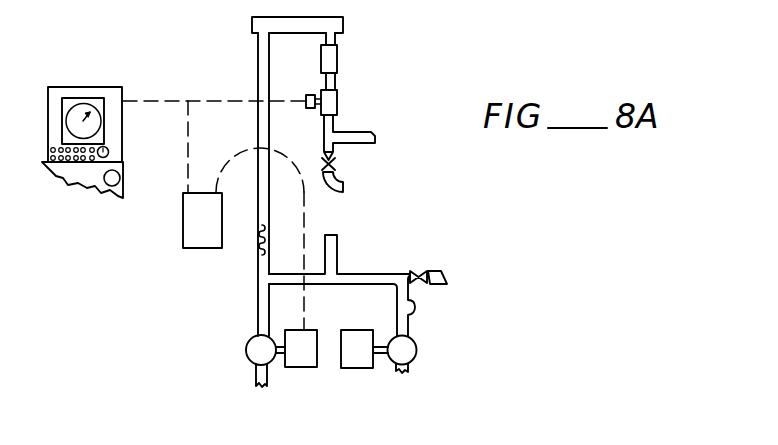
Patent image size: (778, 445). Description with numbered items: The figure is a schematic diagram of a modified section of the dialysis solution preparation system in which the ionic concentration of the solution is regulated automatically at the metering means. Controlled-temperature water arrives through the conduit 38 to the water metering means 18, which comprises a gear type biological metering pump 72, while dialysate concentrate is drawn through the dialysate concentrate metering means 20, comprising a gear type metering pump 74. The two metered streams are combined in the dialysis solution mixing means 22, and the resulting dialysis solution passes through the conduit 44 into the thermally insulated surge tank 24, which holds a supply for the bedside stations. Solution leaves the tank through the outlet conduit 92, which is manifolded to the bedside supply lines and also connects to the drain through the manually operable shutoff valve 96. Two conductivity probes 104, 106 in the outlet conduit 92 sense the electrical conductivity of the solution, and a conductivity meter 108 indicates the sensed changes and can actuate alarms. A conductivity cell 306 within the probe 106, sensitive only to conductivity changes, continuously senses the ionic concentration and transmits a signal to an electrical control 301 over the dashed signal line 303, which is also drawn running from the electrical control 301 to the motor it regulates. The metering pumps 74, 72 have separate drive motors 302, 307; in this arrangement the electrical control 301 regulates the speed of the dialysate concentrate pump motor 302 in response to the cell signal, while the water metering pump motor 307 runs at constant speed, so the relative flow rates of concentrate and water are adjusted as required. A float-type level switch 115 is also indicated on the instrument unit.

The water metering means 18 is at (413, 338).
The dialysate concentrate metering means 20 is at (251, 336).
The dialysis solution mixing means 22 is at (257, 240).
The surge tank 24 is at (252, 21).
The conduit 38 is at (397, 297).
The conduit 44 is at (257, 125).
The water metering pump 72 is at (410, 362).
The dialysate concentrate metering pump 74 is at (250, 358).
The outlet conduit 92 is at (324, 130).
The manually operable shutoff valve 96 is at (337, 166).
The conductivity probe 104 is at (337, 62).
The conductivity probe 106 is at (337, 102).
The conductivity meter 108 is at (102, 114).
The float-type switch 115 is at (121, 178).
The electrical control 301 is at (183, 220).
The dialysate concentrate pump motor 302 is at (302, 368).
The control line 303 is at (178, 101).
The conductivity cell 306 is at (316, 94).
The water metering pump motor 307 is at (357, 368).